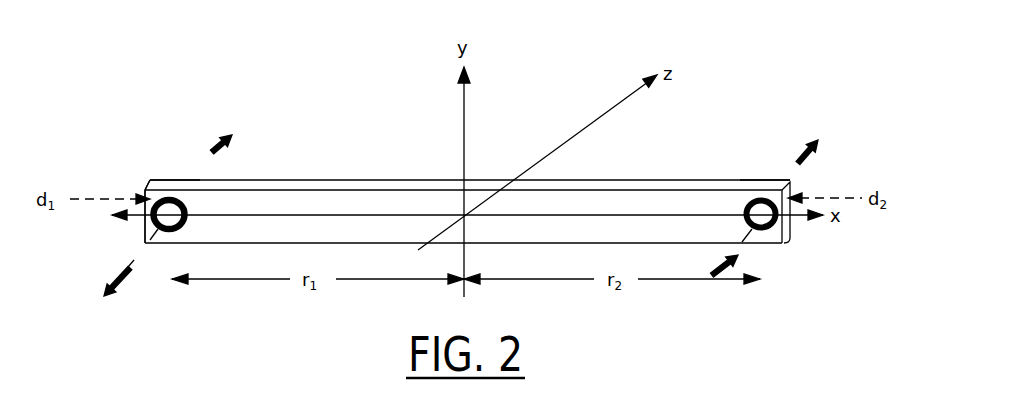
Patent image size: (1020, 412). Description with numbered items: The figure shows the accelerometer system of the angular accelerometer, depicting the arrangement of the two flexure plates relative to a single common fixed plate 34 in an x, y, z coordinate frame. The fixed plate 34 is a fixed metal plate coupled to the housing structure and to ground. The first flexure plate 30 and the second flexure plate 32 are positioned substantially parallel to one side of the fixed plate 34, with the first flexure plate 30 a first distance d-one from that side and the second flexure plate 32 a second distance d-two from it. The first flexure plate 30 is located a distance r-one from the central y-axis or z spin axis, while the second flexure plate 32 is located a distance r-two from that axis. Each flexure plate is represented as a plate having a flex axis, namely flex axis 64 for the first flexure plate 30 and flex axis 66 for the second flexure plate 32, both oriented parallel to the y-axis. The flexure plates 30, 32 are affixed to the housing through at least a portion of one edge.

The first flexure plate 30 is at (162, 236).
The second flexure plate 32 is at (810, 256).
The fixed plate 34 is at (322, 179).
The flex axis 64 is at (203, 166).
The flex axis 66 is at (789, 179).